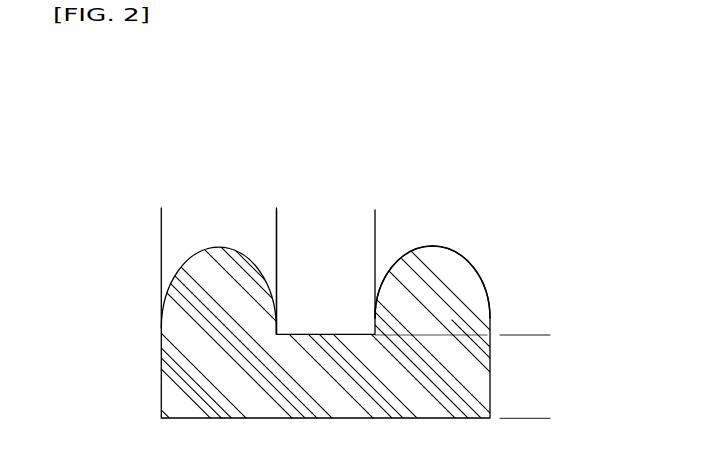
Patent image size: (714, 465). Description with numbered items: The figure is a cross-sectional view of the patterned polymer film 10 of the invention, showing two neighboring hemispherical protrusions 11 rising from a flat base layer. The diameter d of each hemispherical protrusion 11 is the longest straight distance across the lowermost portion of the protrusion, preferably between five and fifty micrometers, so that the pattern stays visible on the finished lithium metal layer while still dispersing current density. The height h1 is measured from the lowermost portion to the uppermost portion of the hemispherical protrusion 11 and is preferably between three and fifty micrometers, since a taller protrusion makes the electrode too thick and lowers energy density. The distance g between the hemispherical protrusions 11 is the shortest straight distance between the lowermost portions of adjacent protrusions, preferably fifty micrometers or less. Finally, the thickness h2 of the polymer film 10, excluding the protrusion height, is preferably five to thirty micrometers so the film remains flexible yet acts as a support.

The polymer film 10 is at (347, 119).
The hemispherical protrusion 11 is at (460, 267).
The diameter of the hemispherical protrusion d is at (276, 226).
The distance between the hemispherical protrusions g is at (375, 235).
The height of the hemispherical protrusion h1 is at (433, 247).
The thickness of the polymer film h2 is at (540, 335).